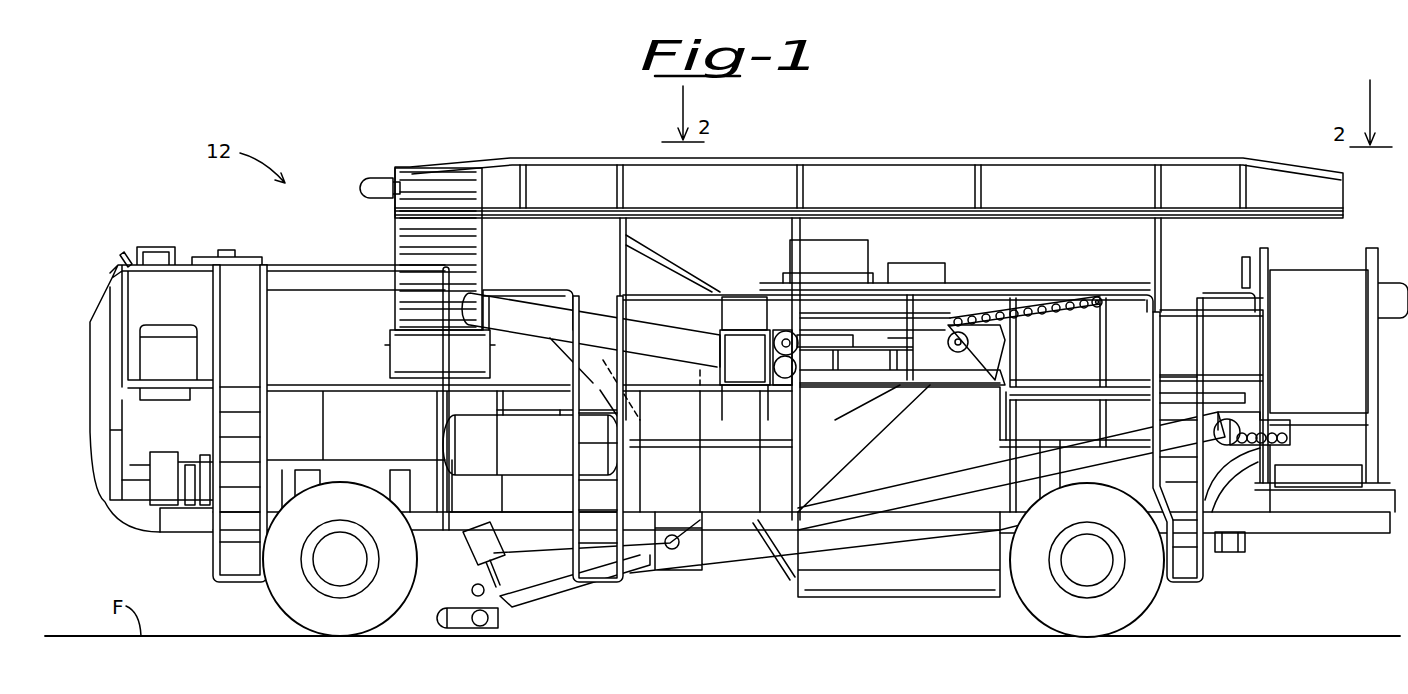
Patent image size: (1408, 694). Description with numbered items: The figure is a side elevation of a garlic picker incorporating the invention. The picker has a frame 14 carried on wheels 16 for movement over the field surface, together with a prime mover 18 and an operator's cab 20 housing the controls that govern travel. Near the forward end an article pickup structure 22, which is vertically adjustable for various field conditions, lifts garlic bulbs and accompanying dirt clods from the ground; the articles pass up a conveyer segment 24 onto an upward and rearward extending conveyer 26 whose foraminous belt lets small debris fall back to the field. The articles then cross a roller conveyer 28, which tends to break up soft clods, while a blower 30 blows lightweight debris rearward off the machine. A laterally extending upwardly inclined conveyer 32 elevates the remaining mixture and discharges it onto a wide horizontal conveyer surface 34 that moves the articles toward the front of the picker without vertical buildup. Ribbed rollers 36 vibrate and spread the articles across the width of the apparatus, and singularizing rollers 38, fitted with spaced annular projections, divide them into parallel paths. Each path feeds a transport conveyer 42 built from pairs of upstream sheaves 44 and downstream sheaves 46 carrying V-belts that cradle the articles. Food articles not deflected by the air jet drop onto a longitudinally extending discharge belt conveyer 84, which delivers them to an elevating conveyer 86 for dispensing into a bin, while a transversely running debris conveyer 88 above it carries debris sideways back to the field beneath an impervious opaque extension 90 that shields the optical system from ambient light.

The frame 14 is at (195, 525).
The wheels 16 is at (265, 602).
The prime mover 18 is at (130, 485).
The operator's cab 20 is at (140, 292).
The article pickup structure 22 is at (452, 606).
The conveyer segment 24 is at (568, 595).
The conveyer 26 is at (995, 478).
The roller conveyer 28 is at (1298, 449).
The blower 30 is at (1255, 546).
The laterally extending upwardly inclined conveyer 32 is at (1325, 355).
The horizontal conveyer surface 34 is at (1176, 282).
The ribbed rollers 36 is at (1082, 302).
The singularizing rollers 38 is at (1005, 316).
The transport conveyer 42 is at (893, 379).
The upstream sheaves 44 is at (975, 341).
The downstream sheaves 46 is at (775, 345).
The discharge belt conveyer 84 is at (608, 310).
The elevating conveyer 86 is at (390, 236).
The debris conveyer 88 is at (716, 323).
The opaque extension 90 is at (743, 297).